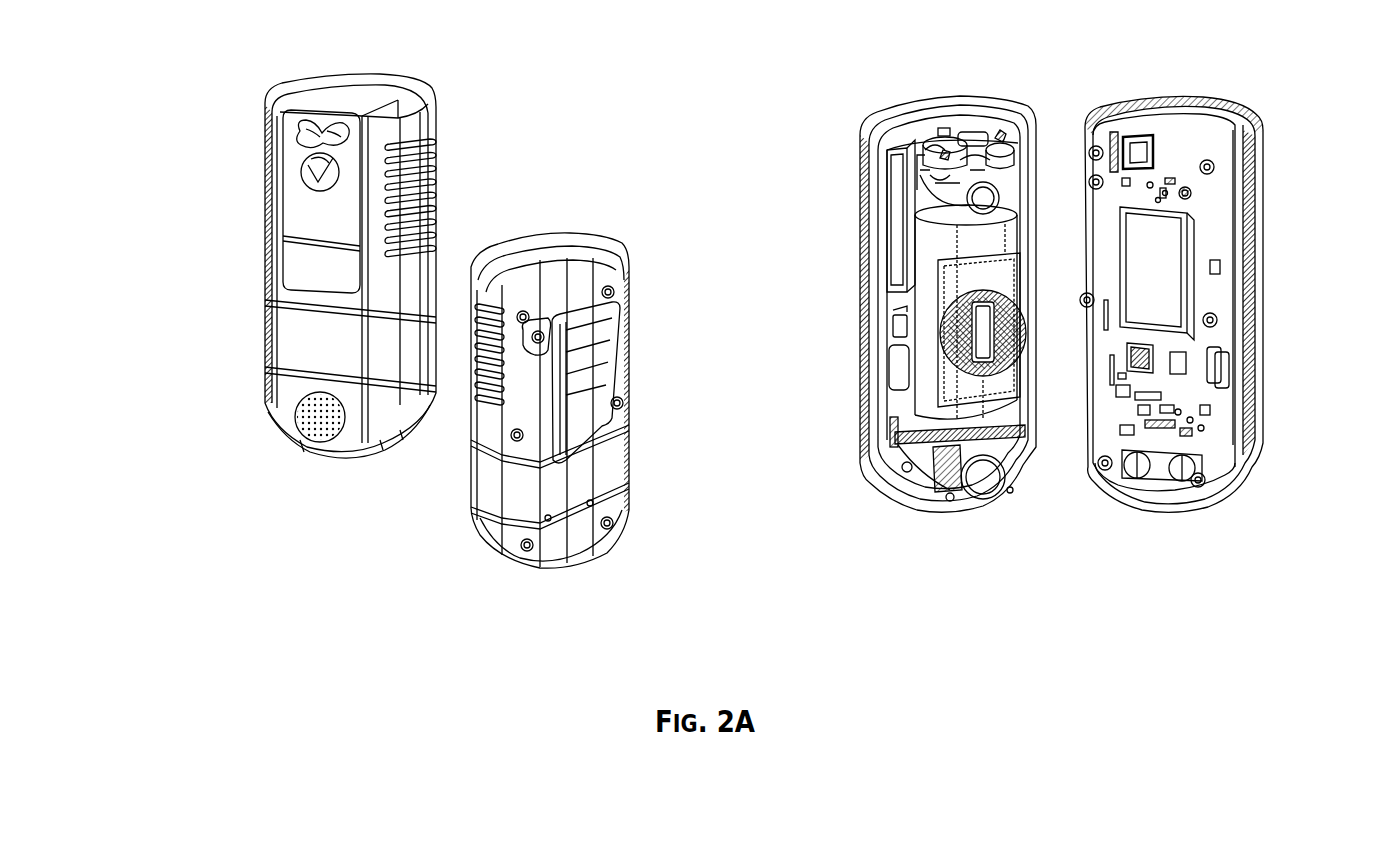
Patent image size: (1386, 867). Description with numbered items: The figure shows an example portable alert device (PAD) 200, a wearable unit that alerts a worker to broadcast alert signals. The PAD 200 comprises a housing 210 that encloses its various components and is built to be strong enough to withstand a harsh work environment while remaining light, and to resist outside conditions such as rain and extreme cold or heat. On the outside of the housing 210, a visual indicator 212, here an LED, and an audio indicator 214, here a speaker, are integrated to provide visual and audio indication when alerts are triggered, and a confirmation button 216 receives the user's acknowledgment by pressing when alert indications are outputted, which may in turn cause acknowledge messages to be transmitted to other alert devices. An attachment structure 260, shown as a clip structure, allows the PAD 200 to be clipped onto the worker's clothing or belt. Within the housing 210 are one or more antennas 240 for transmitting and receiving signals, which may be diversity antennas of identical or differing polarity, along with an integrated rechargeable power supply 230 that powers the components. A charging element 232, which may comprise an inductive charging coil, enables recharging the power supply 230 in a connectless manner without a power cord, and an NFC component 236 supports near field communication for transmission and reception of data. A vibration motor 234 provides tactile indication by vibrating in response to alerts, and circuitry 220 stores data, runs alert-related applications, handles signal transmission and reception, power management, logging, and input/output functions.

The portable alert device (PAD) 200 is at (345, 545).
The housing 210 is at (442, 182).
The visual indicator 212 is at (290, 128).
The audio indicator 214 is at (295, 402).
The confirmation button 216 is at (305, 185).
The circuitry 220 is at (1165, 168).
The power supply 230 is at (925, 268).
The charging element 232 is at (1010, 383).
The vibration motor 234 is at (900, 373).
The NFC component 236 is at (1157, 462).
The antennas 240 is at (1027, 128).
The attachment structure 260 is at (577, 437).